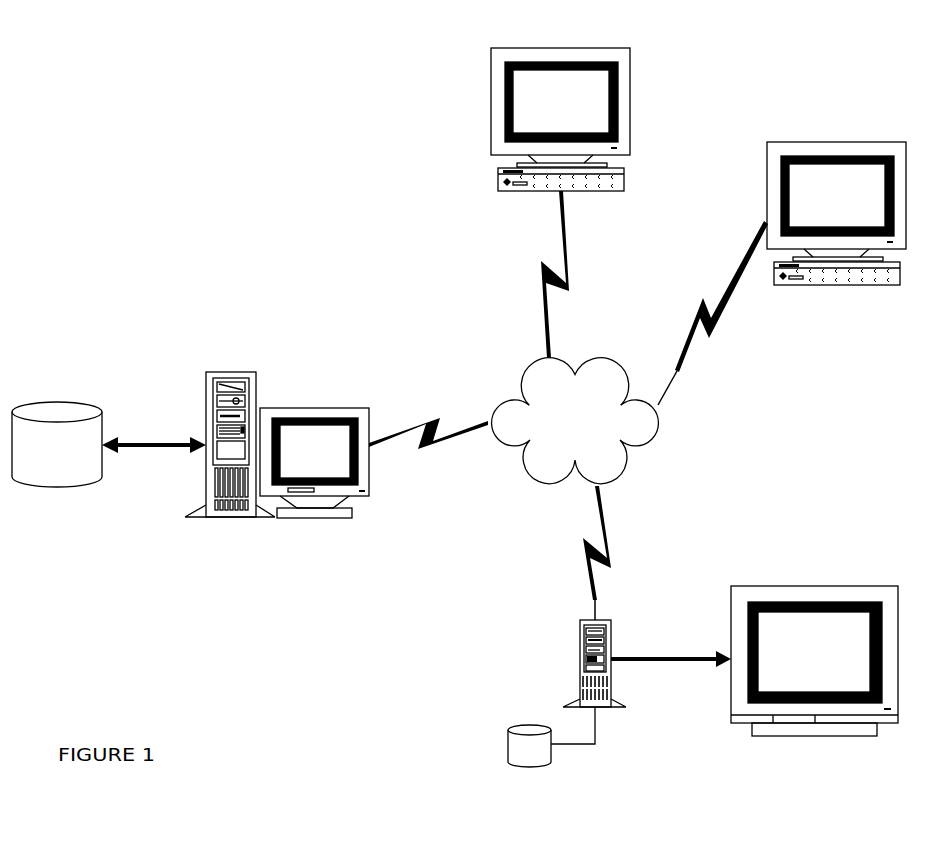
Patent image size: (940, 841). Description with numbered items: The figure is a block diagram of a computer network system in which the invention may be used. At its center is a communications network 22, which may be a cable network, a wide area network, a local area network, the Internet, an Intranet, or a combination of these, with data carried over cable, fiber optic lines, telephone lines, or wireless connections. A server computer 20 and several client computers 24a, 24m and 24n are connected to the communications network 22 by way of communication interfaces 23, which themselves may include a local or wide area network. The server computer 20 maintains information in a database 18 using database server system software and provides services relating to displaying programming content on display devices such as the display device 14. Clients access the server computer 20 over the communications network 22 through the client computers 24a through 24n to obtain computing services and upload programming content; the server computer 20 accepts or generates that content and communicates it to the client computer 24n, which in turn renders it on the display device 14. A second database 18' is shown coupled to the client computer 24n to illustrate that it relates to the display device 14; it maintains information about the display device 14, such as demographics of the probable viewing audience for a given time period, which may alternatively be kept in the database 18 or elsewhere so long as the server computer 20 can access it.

The display device 14 is at (815, 586).
The database 18 is at (57, 412).
The database 18' is at (519, 763).
The server computer 20 is at (224, 372).
The communications network 22 is at (598, 358).
The communication interface 23 is at (432, 415).
The client computer 24a is at (560, 48).
The client computer 24m is at (836, 142).
The client computer 24n is at (580, 663).